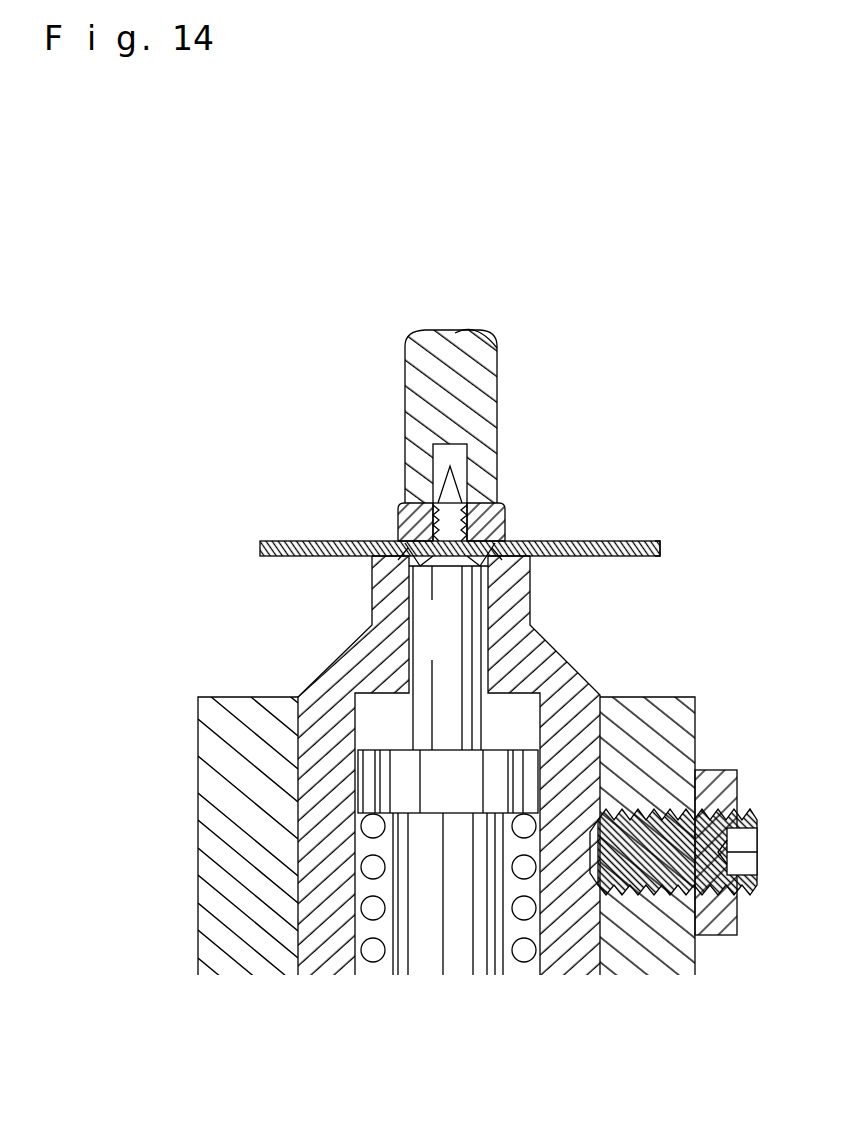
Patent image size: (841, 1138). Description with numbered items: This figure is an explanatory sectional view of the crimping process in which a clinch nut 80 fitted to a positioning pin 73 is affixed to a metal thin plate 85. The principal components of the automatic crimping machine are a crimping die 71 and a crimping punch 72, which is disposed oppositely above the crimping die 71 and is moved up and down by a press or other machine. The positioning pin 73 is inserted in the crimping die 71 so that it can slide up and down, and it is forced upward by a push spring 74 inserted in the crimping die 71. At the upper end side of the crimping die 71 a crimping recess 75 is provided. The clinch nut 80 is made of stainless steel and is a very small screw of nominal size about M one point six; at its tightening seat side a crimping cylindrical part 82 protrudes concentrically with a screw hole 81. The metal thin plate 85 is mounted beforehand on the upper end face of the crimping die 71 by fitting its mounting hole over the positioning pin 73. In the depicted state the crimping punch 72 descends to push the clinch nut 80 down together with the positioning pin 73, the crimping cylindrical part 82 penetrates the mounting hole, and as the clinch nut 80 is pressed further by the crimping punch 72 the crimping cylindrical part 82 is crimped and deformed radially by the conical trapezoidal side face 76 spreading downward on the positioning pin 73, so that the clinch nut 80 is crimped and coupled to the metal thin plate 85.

The crimping die 71 is at (318, 690).
The crimping punch 72 is at (418, 375).
The positioning pin 73 is at (462, 474).
The push spring 74 is at (365, 956).
The crimping recess 75 is at (376, 590).
The conical trapezoidal side face 76 is at (505, 532).
The clinch nut 80 is at (505, 513).
The screw hole 81 is at (400, 513).
The crimping cylindrical part 82 is at (424, 568).
The metal thin plate 85 is at (296, 540).